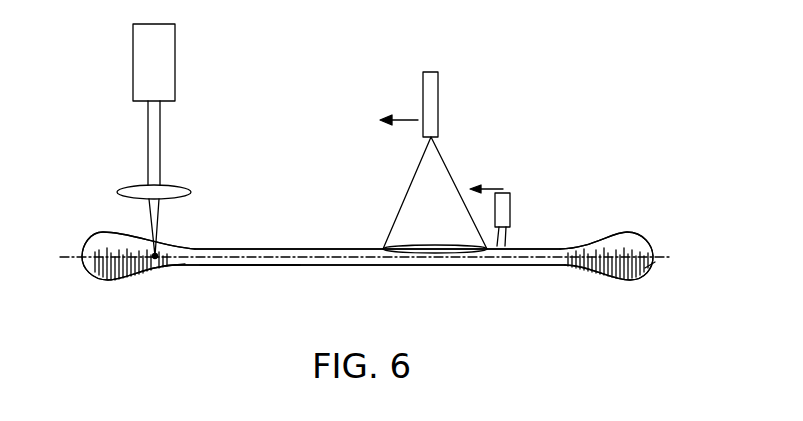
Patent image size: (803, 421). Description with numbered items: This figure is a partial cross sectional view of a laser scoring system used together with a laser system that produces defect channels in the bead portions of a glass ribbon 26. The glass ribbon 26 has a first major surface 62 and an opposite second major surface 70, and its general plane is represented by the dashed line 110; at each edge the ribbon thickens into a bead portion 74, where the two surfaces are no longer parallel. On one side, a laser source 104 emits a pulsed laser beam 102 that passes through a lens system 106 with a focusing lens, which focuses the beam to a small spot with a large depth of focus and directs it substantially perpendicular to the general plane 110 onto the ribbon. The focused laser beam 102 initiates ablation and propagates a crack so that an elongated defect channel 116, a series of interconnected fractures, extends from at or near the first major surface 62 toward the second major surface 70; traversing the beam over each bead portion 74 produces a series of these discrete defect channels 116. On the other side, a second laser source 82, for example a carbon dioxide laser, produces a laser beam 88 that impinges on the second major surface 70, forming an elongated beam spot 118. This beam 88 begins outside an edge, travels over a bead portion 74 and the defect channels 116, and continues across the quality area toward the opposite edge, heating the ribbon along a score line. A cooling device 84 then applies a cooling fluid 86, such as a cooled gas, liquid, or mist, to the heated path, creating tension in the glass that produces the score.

The glass ribbon 26 is at (543, 273).
The first major surface 62 is at (236, 266).
The second major surface 70 is at (267, 248).
The bead portions 74 is at (101, 231).
The laser source 82 is at (438, 93).
The cooling device 84 is at (510, 205).
The cooling fluid 86 is at (506, 244).
The laser beam 88 is at (396, 212).
The laser beam 102 is at (163, 216).
The laser source 104 is at (175, 57).
The lens system 106 is at (186, 188).
The general plane of the ribbon 110 is at (672, 258).
The defect channel 116 is at (182, 267).
The beam spot 118 is at (427, 247).